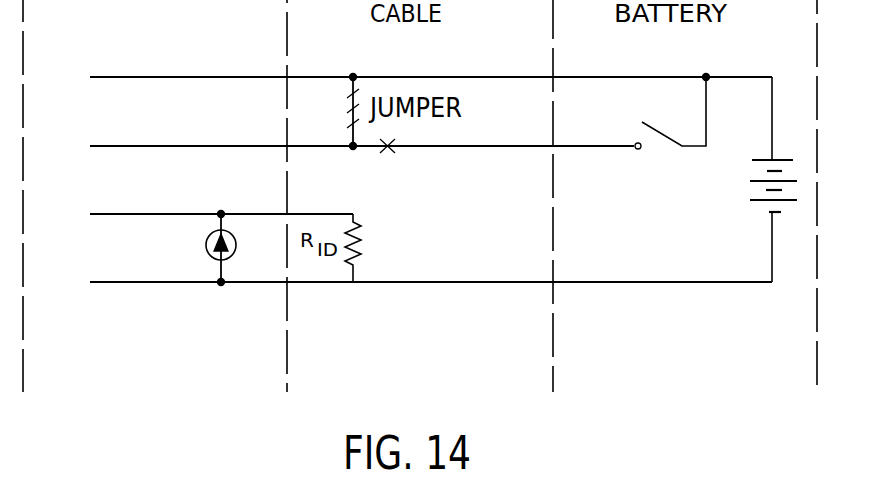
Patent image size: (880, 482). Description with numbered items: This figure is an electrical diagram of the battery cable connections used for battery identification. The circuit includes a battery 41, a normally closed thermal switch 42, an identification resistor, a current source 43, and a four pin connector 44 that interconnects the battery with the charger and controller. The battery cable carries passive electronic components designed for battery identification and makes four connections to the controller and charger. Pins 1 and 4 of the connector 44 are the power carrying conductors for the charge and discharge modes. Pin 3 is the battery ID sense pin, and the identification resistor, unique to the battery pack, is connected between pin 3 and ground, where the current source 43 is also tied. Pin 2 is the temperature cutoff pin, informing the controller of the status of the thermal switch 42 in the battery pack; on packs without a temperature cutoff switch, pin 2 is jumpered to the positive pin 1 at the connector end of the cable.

The pin 1 is at (407, 74).
The pin 2 is at (332, 144).
The pin 3 is at (197, 210).
The pin 4 is at (410, 277).
The battery 41 is at (760, 200).
The normally closed thermal switch 42 is at (668, 132).
The current source 43 is at (236, 256).
The four pin connector 44 is at (67, 302).